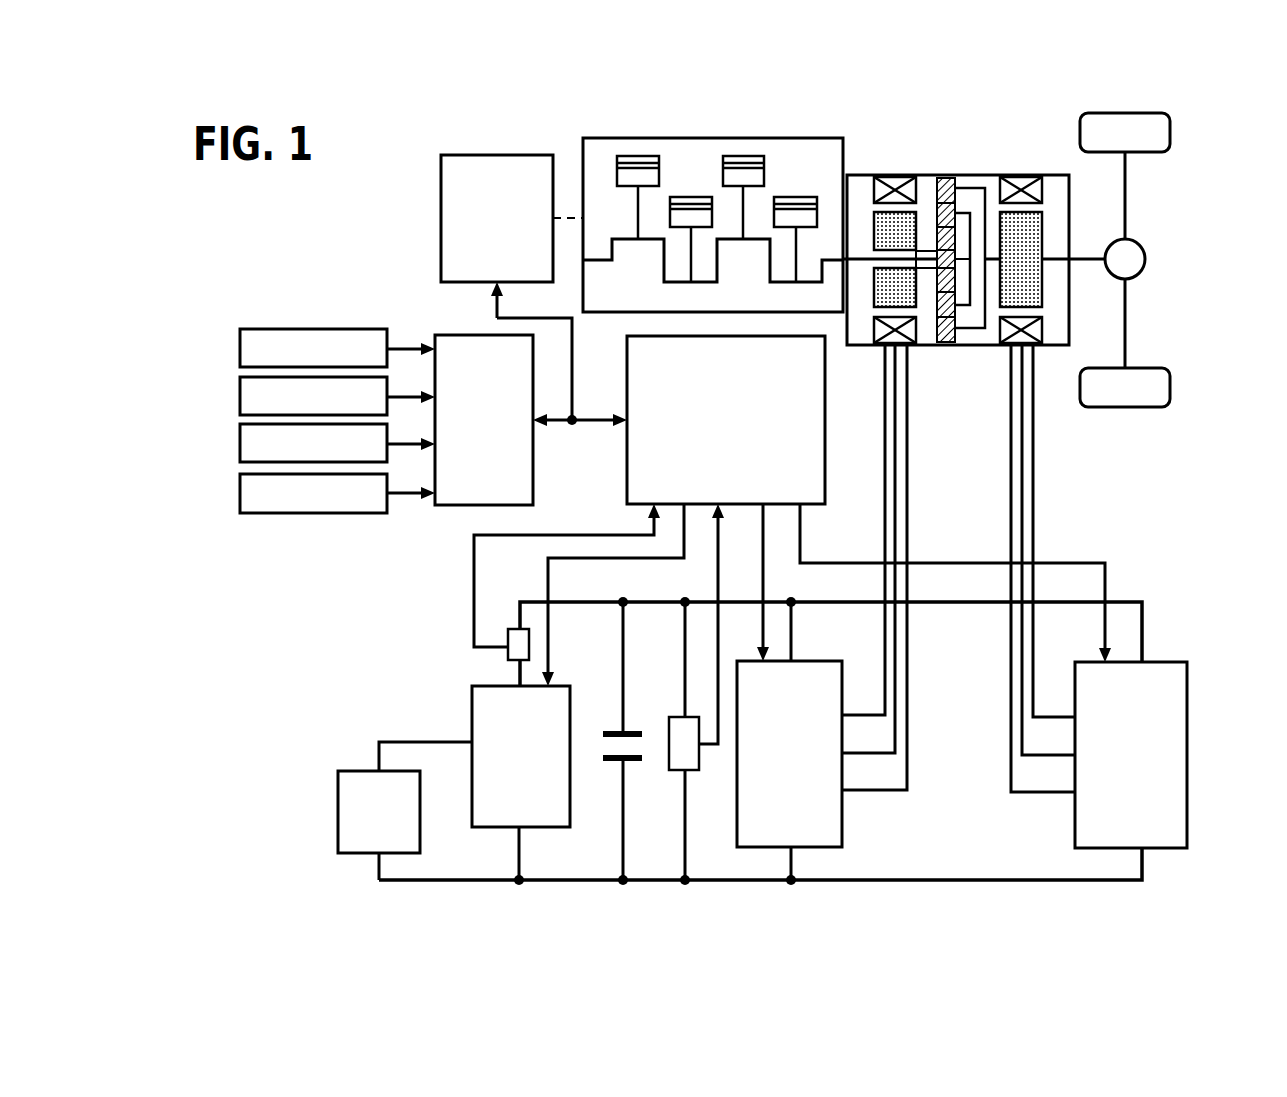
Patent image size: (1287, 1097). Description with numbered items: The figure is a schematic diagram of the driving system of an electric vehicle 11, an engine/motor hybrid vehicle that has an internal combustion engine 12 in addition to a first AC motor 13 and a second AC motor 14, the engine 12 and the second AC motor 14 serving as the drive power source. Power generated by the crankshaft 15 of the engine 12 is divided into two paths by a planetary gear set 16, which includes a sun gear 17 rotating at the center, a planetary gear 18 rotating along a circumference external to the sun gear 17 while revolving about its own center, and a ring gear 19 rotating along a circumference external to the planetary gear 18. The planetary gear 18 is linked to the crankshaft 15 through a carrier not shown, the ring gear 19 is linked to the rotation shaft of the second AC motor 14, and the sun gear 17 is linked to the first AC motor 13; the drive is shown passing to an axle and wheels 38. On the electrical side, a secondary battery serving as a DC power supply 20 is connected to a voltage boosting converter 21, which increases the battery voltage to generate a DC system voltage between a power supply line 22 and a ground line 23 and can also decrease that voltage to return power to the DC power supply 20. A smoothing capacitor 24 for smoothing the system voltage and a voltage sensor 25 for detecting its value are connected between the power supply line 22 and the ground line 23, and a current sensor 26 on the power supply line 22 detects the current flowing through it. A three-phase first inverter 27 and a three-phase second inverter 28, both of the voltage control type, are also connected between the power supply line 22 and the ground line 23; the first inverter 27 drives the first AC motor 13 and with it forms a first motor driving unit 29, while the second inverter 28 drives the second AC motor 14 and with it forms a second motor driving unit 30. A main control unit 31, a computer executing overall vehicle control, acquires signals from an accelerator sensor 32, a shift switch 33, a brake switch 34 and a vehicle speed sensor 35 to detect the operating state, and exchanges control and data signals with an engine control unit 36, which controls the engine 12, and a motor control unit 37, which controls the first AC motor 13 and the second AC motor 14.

The electric vehicle 11 is at (974, 252).
The internal combustion engine 12 is at (697, 138).
The first AC motor 13 is at (897, 177).
The second AC motor 14 is at (1020, 177).
The crankshaft 15 is at (853, 257).
The planetary gear set 16 is at (946, 177).
The sun gear 17 is at (932, 345).
The planetary gear 18 is at (938, 345).
The ring gear 19 is at (943, 345).
The DC power supply 20 is at (338, 812).
The voltage boosting converter 21 is at (472, 705).
The power supply line 22 is at (585, 602).
The ground line 23 is at (593, 880).
The smoothing capacitor 24 is at (637, 763).
The voltage sensor 25 is at (677, 717).
The current sensor 26 is at (517, 628).
The three-phase first inverter 27 is at (820, 660).
The three-phase second inverter 28 is at (1188, 713).
The first motor driving unit 29 is at (867, 803).
The second motor driving unit 30 is at (1049, 803).
The main control unit 31 is at (452, 335).
The accelerator sensor 32 is at (240, 349).
The shift switch 33 is at (240, 396).
The brake switch 34 is at (240, 443).
The vehicle speed sensor 35 is at (240, 493).
The engine control unit 36 is at (497, 155).
The motor control unit 37 is at (825, 428).
The axle 38 is at (1127, 197).